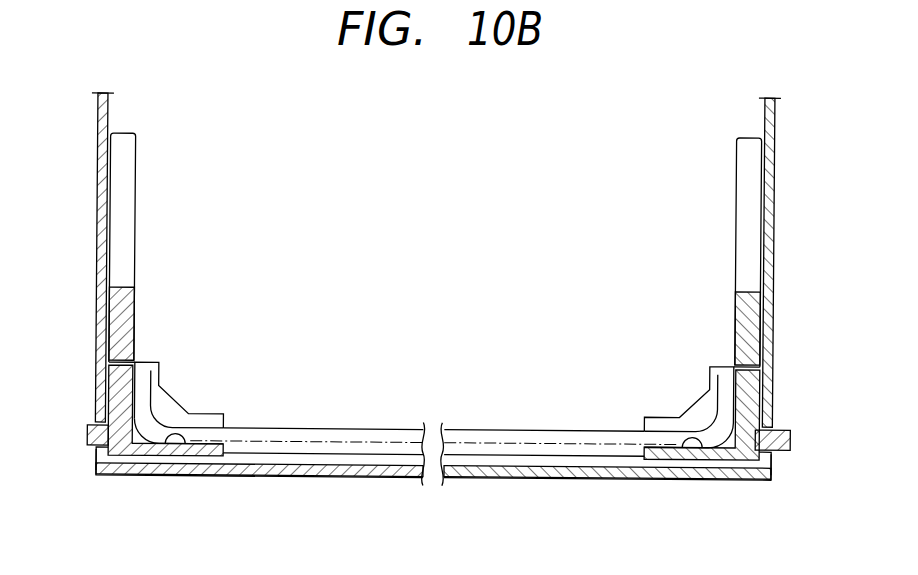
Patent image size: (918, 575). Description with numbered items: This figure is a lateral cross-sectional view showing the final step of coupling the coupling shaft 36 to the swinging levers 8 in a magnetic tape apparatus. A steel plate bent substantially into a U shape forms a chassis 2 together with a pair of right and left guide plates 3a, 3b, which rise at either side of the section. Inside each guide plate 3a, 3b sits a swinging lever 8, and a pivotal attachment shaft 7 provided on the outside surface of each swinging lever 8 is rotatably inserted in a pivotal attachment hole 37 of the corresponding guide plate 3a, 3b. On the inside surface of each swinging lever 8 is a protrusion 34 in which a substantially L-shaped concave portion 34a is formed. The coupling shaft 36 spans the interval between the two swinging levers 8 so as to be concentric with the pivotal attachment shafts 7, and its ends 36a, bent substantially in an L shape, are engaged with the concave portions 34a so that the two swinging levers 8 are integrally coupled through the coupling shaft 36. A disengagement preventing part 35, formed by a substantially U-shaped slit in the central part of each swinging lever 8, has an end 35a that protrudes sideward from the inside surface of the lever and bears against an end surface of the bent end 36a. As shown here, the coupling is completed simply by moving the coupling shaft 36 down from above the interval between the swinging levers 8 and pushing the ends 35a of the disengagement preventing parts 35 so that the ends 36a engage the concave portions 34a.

The chassis 2 is at (469, 480).
The guide plate 3a is at (773, 208).
The guide plate 3b is at (95, 203).
The pivotal attachment shaft 7 is at (88, 436).
The swinging lever 8 is at (134, 298).
The protrusion 34 is at (240, 474).
The concave portion 34a is at (178, 450).
The disengagement preventing part 35 is at (108, 357).
The end of disengagement preventing part 35a is at (142, 360).
The coupling shaft 36 is at (469, 430).
The end of coupling shaft 36a is at (148, 380).
The pivotal attachment hole 37 is at (93, 452).